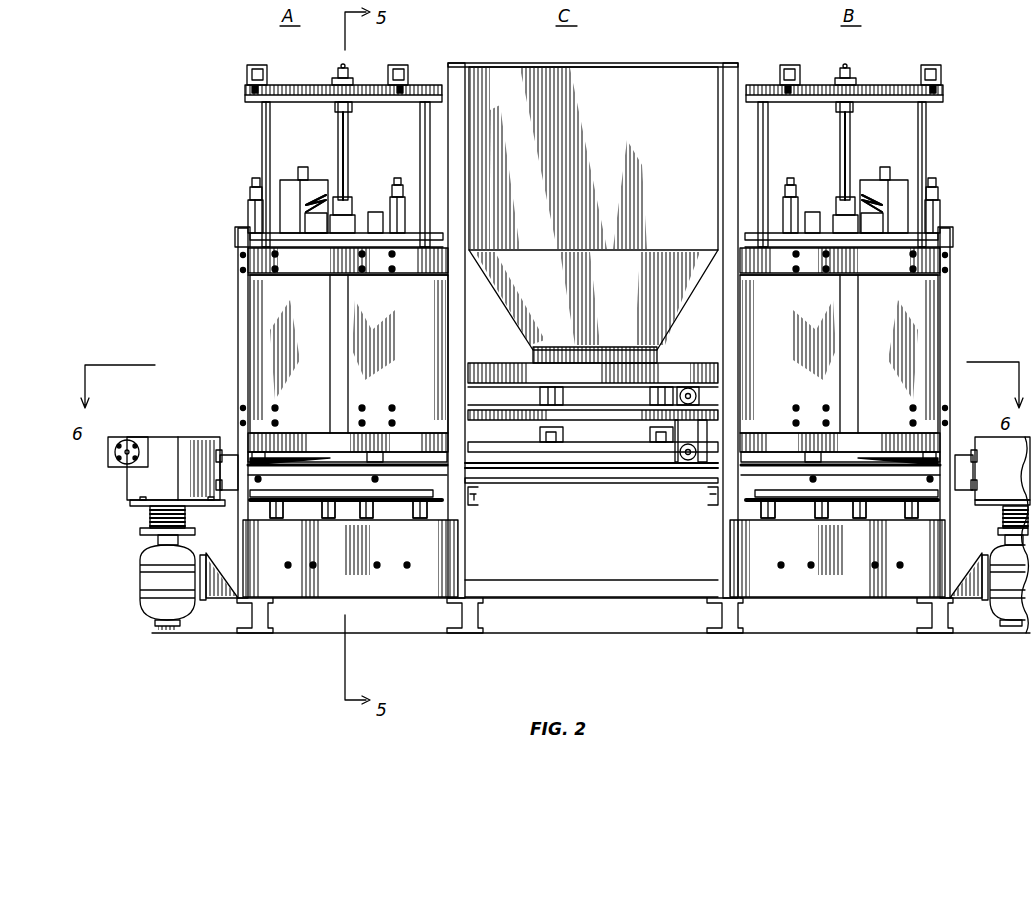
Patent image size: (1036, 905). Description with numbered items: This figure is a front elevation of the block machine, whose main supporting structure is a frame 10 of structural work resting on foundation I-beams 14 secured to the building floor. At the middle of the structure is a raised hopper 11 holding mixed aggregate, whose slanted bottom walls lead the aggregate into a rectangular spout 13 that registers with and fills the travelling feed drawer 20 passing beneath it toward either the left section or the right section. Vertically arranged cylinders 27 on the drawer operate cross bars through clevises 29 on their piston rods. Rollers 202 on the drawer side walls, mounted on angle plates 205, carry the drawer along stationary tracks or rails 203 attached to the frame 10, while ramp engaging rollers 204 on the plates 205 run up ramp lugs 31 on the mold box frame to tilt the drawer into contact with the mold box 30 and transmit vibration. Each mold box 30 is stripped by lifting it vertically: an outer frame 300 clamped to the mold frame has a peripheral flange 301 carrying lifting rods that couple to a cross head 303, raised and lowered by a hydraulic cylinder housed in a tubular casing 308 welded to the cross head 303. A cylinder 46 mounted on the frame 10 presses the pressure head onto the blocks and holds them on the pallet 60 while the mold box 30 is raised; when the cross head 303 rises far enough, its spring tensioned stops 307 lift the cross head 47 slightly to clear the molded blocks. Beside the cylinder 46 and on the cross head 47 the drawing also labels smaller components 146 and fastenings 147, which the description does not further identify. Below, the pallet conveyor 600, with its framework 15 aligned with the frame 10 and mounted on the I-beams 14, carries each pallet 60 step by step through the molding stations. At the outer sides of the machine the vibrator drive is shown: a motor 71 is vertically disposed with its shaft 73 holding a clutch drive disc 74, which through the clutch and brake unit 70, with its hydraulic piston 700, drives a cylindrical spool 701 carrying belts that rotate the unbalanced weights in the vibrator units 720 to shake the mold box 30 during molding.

The frame 10 is at (745, 70).
The hopper 11 is at (650, 63).
The rectangular spout 13 is at (660, 353).
The I-beams 14 is at (255, 636).
The framework of the pallet conveyor 15 is at (463, 548).
The feed drawer 20 is at (490, 395).
The cylinders 27 is at (650, 398).
The clevises 29 is at (650, 430).
The mold box 30 is at (308, 482).
The ramp lugs 31 is at (290, 465).
The cylinder 46 is at (352, 210).
The cross head 47 is at (300, 85).
The pallet 60 is at (398, 502).
The clutch and brake unit 70 is at (135, 504).
The motor 71 is at (138, 580).
The shaft 73 is at (155, 540).
The clutch drive disc 74 is at (140, 532).
The side cylinder 146 is at (252, 182).
The bolt fastening 147 is at (250, 92).
The rollers 202 is at (700, 392).
The tracks or rails 203 is at (715, 415).
The ramp engaging rollers 204 is at (687, 460).
The angle plates 205 is at (686, 437).
The outer frame 300 is at (238, 487).
The peripheral flange 301 is at (245, 460).
The cross head 303 is at (338, 228).
The spring tensioned stops 307 is at (316, 198).
The tubular casing 308 is at (278, 180).
The pallet conveyor 600 is at (460, 512).
The hydraulic piston 700 is at (1013, 473).
The cylindrical spool 701 is at (150, 515).
The vibrator units 720 is at (140, 478).